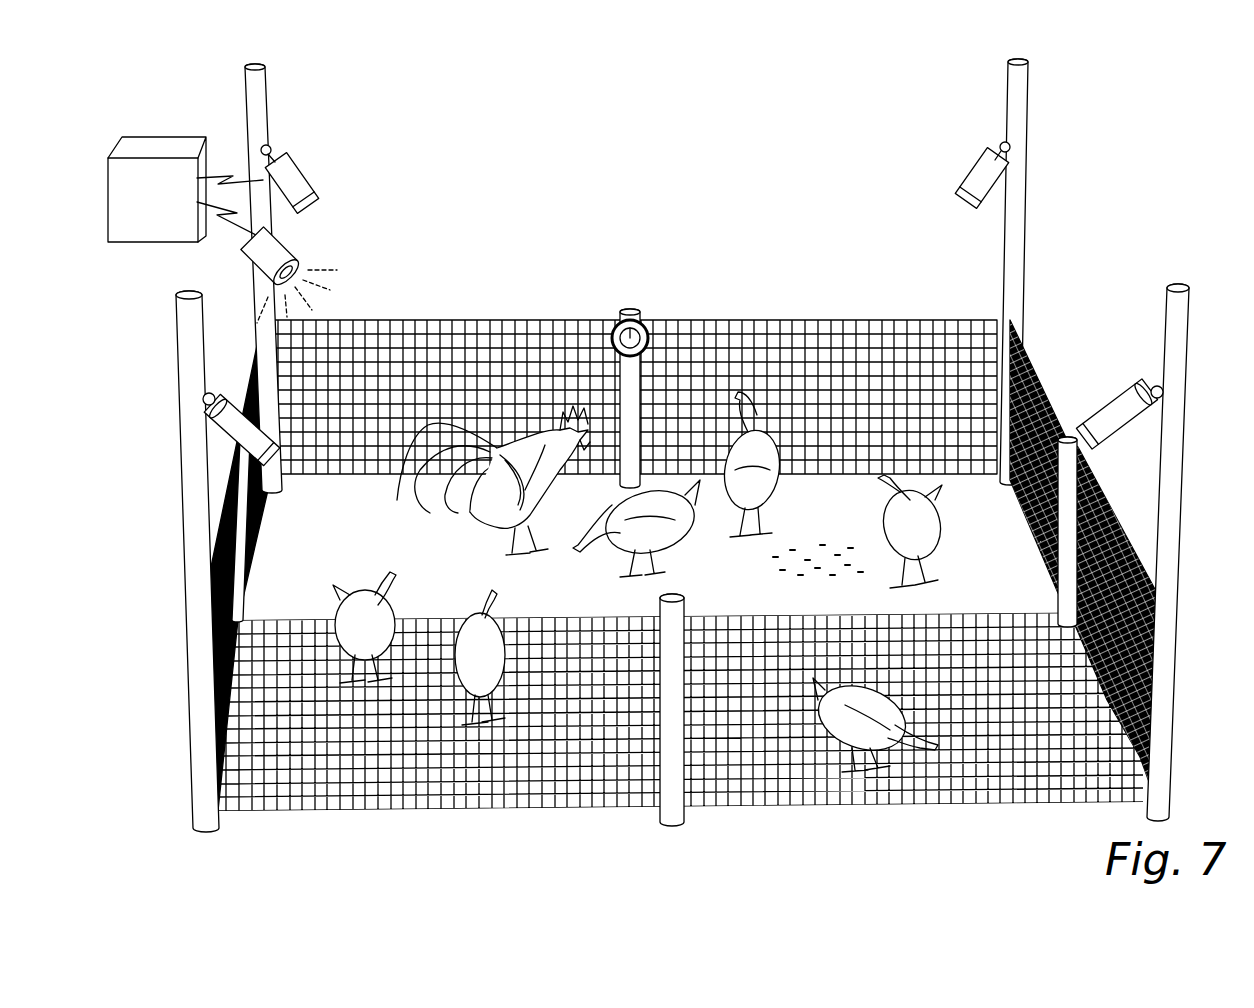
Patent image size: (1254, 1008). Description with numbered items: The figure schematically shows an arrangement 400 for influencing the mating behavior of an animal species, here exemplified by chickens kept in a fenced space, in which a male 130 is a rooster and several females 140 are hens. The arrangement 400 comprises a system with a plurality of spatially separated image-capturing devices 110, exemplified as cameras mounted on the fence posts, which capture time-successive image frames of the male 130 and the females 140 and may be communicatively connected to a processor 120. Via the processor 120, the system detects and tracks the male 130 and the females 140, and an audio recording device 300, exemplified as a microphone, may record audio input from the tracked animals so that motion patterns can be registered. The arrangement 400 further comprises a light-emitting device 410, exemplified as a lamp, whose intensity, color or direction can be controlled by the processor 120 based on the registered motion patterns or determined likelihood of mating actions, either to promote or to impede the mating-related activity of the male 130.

The arrangement 400 is at (822, 117).
The processor 120 is at (150, 152).
The image-capturing devices 110 is at (300, 170).
The light-emitting device 410 is at (302, 252).
The audio recording device 300 is at (635, 312).
The male 130 is at (505, 465).
The female 140 is at (775, 445).